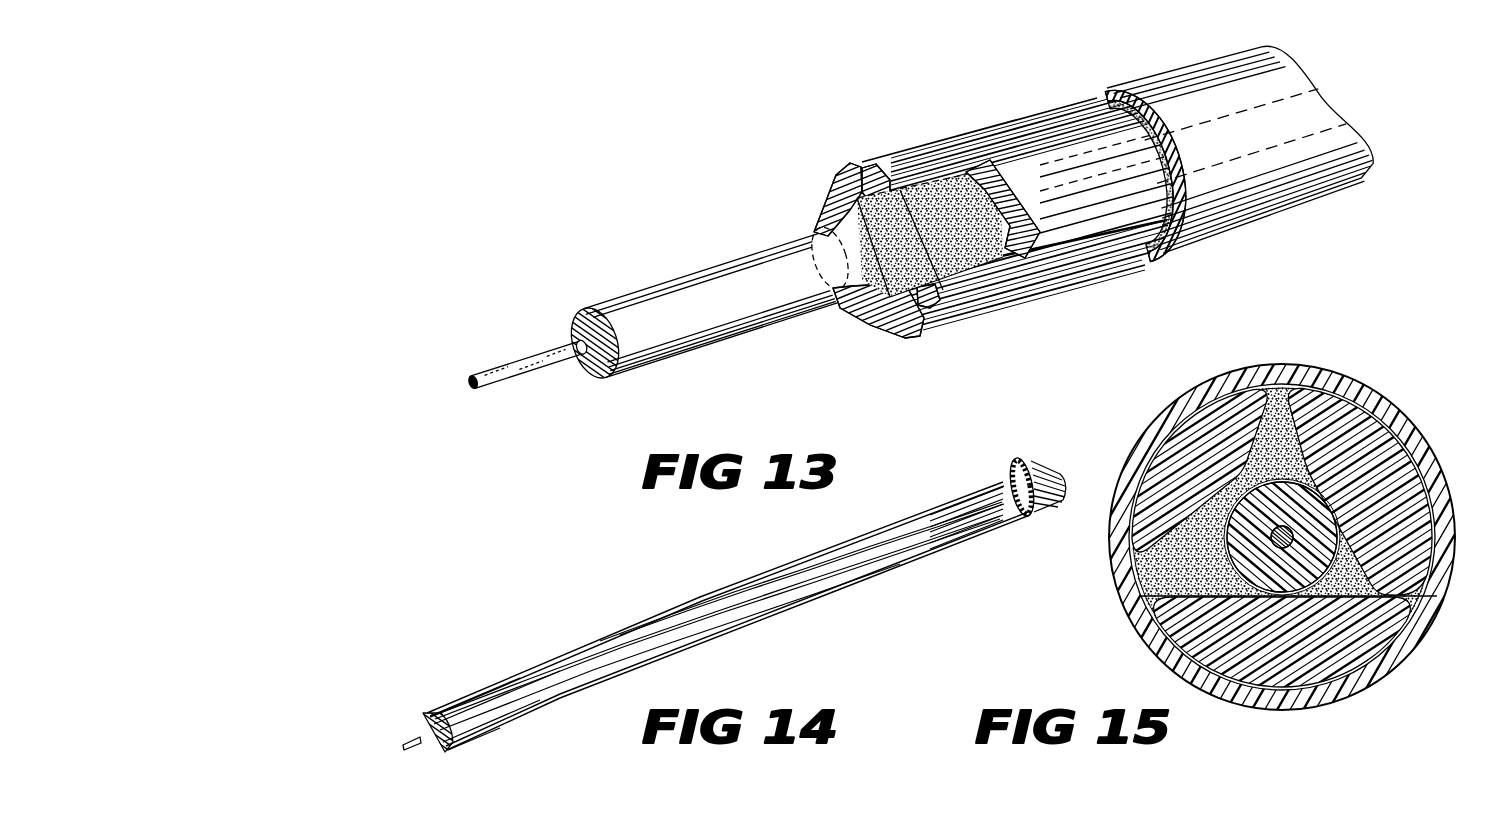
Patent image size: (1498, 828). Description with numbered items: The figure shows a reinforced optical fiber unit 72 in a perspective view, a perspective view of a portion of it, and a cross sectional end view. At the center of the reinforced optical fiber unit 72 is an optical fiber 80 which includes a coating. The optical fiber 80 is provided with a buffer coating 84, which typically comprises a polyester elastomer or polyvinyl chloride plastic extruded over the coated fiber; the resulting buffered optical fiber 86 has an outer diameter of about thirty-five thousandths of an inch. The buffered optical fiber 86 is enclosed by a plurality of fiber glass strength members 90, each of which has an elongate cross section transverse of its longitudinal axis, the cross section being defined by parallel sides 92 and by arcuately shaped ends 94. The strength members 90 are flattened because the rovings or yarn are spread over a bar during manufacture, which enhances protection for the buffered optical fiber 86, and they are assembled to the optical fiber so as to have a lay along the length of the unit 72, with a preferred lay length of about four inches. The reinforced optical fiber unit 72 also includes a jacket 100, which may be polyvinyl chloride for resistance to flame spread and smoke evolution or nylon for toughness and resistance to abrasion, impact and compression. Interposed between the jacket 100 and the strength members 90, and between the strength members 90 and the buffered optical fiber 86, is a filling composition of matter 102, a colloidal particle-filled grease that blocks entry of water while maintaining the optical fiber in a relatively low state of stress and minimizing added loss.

In FIG. 13, the reinforced optical fiber unit 72 is at (1097, 70).
In FIG. 14, the reinforced optical fiber unit 72 is at (945, 478).
In FIG. 15, the reinforced optical fiber unit 72 is at (1355, 373).
In FIG. 13, the optical fiber 80 is at (490, 362).
In FIG. 14, the optical fiber 80 is at (412, 743).
In FIG. 15, the optical fiber 80 is at (1293, 548).
In FIG. 13, the buffer coating 84 is at (583, 318).
In FIG. 15, the buffer coating 84 is at (1246, 544).
In FIG. 13, the buffered optical fiber 86 is at (676, 278).
In FIG. 14, the buffered optical fiber 86 is at (410, 725).
In FIG. 15, the buffered optical fiber 86 is at (1175, 640).
In FIG. 13, the fiber glass strength member 90 is at (845, 187).
In FIG. 14, the fiber glass strength member 90 is at (930, 520).
In FIG. 15, the fiber glass strength member 90 is at (1190, 428).
In FIG. 13, the parallel sides 92 is at (818, 230).
In FIG. 15, the parallel sides 92 is at (1300, 510).
In FIG. 13, the arcuately shaped ends 94 is at (846, 168).
In FIG. 15, the arcuately shaped ends 94 is at (1296, 384).
In FIG. 13, the jacket 100 is at (1084, 97).
In FIG. 14, the jacket 100 is at (1040, 450).
In FIG. 15, the jacket 100 is at (1412, 424).
In FIG. 13, the filling composition of matter 102 is at (1163, 160).
In FIG. 15, the filling composition of matter 102 is at (1245, 488).